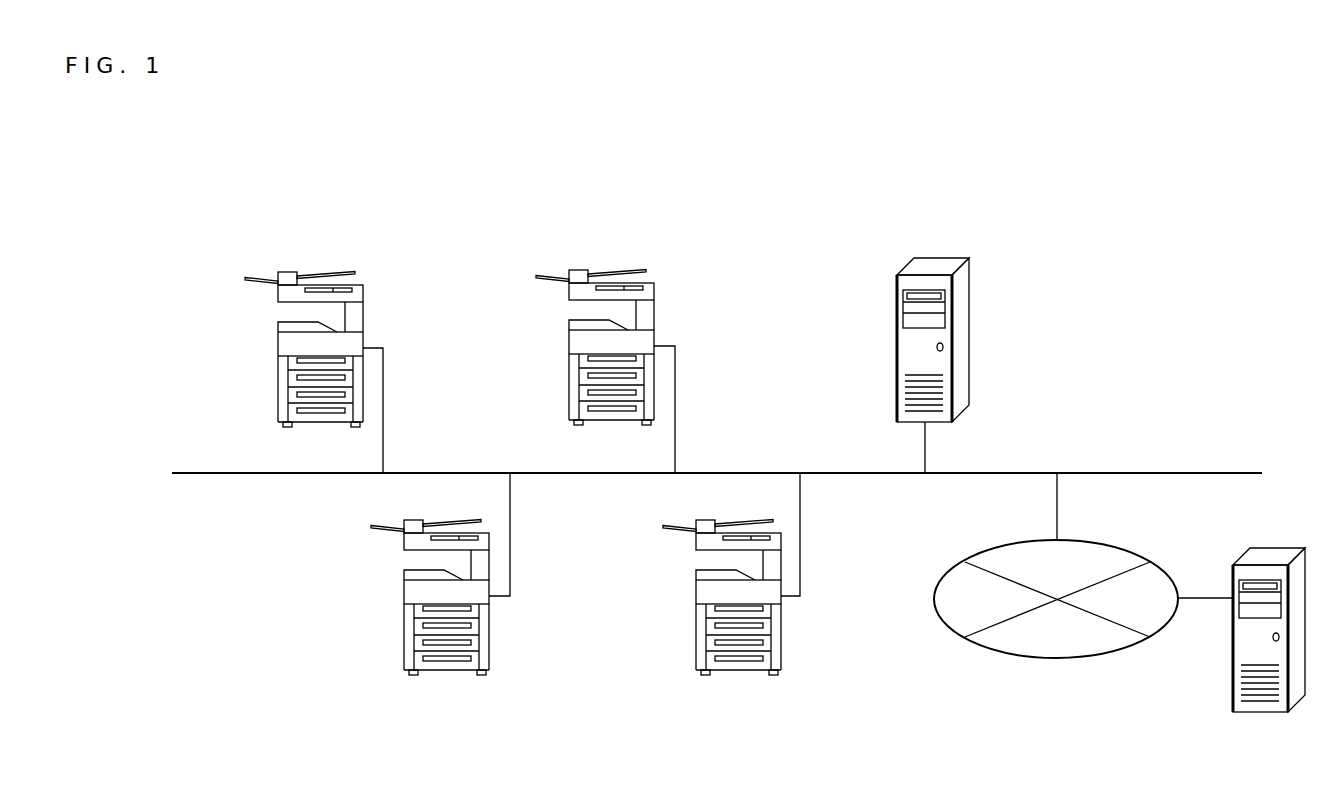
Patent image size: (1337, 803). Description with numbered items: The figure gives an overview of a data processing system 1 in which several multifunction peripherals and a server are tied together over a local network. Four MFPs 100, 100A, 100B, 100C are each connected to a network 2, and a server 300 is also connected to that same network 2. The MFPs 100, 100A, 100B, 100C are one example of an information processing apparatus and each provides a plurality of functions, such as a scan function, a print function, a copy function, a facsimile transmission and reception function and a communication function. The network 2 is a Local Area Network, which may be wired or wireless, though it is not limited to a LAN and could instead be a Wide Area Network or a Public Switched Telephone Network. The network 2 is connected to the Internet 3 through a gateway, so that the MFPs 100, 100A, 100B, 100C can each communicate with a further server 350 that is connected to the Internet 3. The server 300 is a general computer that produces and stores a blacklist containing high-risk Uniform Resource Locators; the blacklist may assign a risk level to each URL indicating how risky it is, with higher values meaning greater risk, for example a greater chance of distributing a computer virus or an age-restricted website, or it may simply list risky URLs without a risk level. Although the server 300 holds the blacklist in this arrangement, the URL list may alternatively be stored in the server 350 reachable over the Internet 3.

The data processing system 1 is at (520, 202).
The network 2 is at (1200, 472).
The Internet 3 is at (1113, 543).
The MFP 100 is at (337, 270).
The MFP 100A is at (493, 642).
The MFP 100B is at (623, 270).
The MFP 100C is at (783, 642).
The server 300 is at (958, 252).
The server 350 is at (1255, 545).